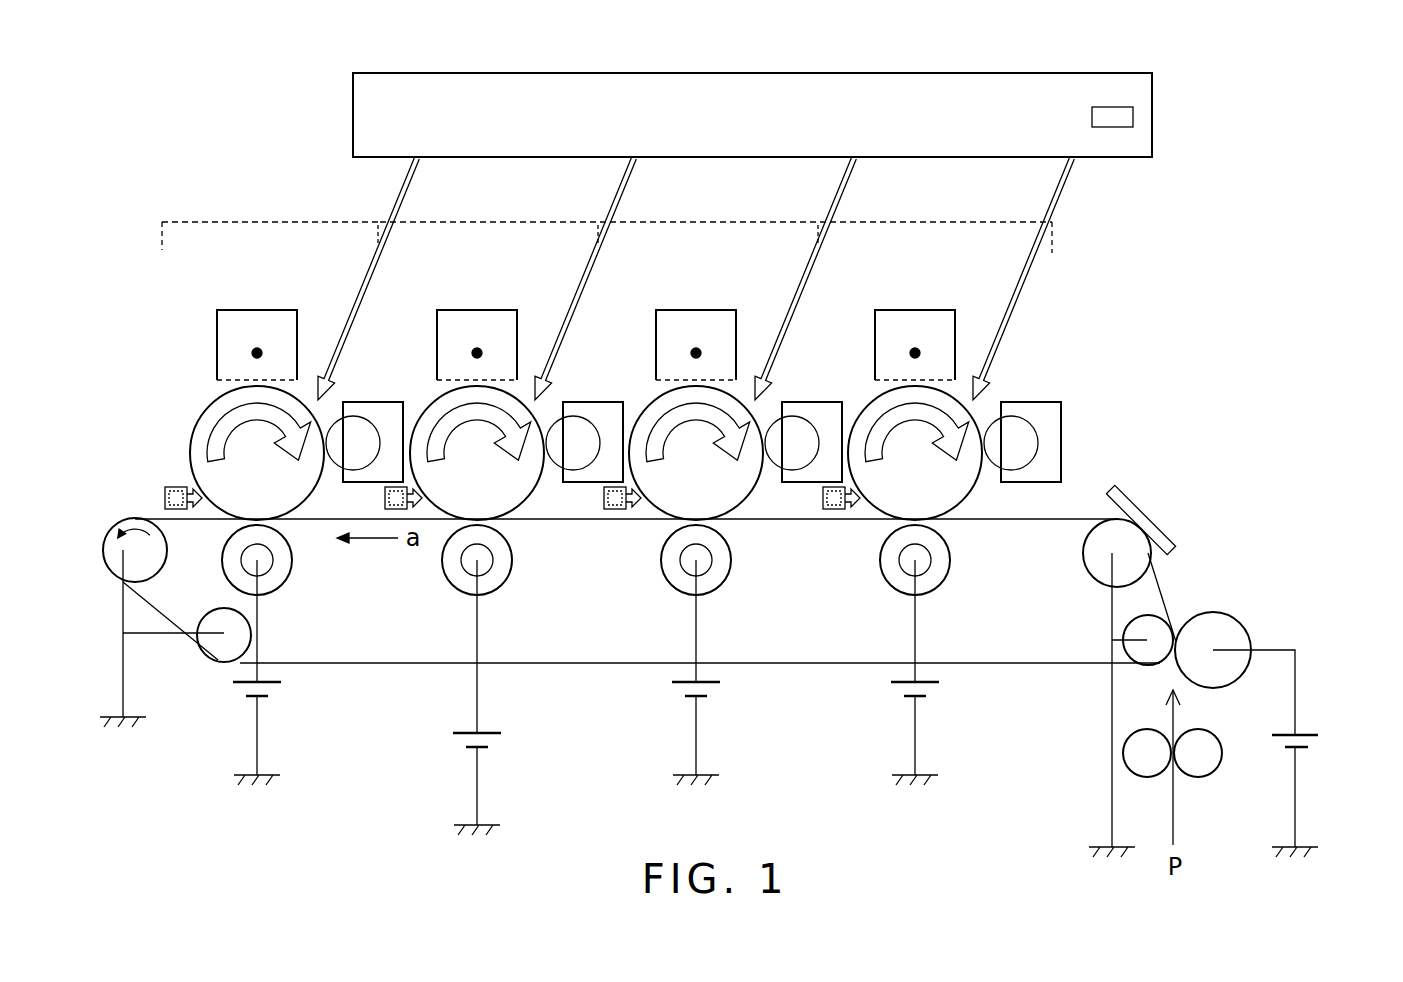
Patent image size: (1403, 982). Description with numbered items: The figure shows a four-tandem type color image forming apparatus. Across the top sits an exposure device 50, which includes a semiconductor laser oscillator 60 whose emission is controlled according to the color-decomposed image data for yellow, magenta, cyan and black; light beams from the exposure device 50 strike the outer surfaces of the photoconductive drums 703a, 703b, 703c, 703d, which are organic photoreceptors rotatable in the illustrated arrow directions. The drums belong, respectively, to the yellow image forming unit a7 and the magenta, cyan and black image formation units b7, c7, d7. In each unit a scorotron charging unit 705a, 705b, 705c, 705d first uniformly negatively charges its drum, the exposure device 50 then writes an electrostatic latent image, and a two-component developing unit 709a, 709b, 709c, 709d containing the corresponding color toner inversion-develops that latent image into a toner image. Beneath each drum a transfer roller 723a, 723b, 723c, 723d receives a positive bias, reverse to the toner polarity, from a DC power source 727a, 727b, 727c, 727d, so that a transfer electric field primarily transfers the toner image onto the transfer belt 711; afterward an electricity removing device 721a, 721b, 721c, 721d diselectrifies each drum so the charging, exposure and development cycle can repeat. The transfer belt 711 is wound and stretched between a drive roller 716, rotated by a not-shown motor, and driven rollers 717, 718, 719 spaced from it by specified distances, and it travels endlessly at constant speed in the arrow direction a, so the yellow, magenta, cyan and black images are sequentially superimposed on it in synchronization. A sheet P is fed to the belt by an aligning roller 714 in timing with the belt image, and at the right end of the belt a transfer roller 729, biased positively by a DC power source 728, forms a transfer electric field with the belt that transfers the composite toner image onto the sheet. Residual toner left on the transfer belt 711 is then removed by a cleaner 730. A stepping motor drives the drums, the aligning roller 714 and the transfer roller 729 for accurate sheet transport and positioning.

The exposure device 50 is at (833, 73).
The semiconductor laser oscillator 60 is at (1135, 117).
The image formation unit d7 is at (263, 222).
The image formation unit c7 is at (492, 222).
The image formation unit b7 is at (716, 222).
The image forming unit a7 is at (938, 222).
The scorotron charging unit 705d is at (262, 310).
The scorotron charging unit 705c is at (482, 310).
The scorotron charging unit 705b is at (701, 310).
The scorotron charging unit 705a is at (920, 310).
The photoconductive drum 703d is at (208, 398).
The photoconductive drum 703c is at (428, 405).
The photoconductive drum 703b is at (647, 405).
The photoconductive drum 703a is at (866, 405).
The two-component developing unit 709d is at (373, 402).
The two-component developing unit 709c is at (593, 402).
The two-component developing unit 709b is at (812, 402).
The two-component developing unit 709a is at (1031, 402).
The electricity removing device 721d is at (163, 493).
The electricity removing device 721c is at (385, 498).
The electricity removing device 721b is at (604, 498).
The electricity removing device 721a is at (823, 498).
The transfer roller 723d is at (293, 562).
The transfer roller 723c is at (513, 562).
The transfer roller 723b is at (732, 562).
The transfer roller 723a is at (950, 566).
The DC power source 727d is at (269, 691).
The DC power source 727c is at (489, 742).
The DC power source 727b is at (708, 691).
The DC power source 727a is at (927, 691).
The transfer belt 711 is at (1020, 522).
The drive roller 716 is at (104, 558).
The driven roller 717 is at (216, 663).
The driven roller 718 is at (1097, 566).
The driven roller 719 is at (1153, 665).
The transfer roller 729 is at (1245, 626).
The DC power source 728 is at (1320, 745).
The cleaner 730 is at (1145, 509).
The aligning roller 714 is at (1210, 748).